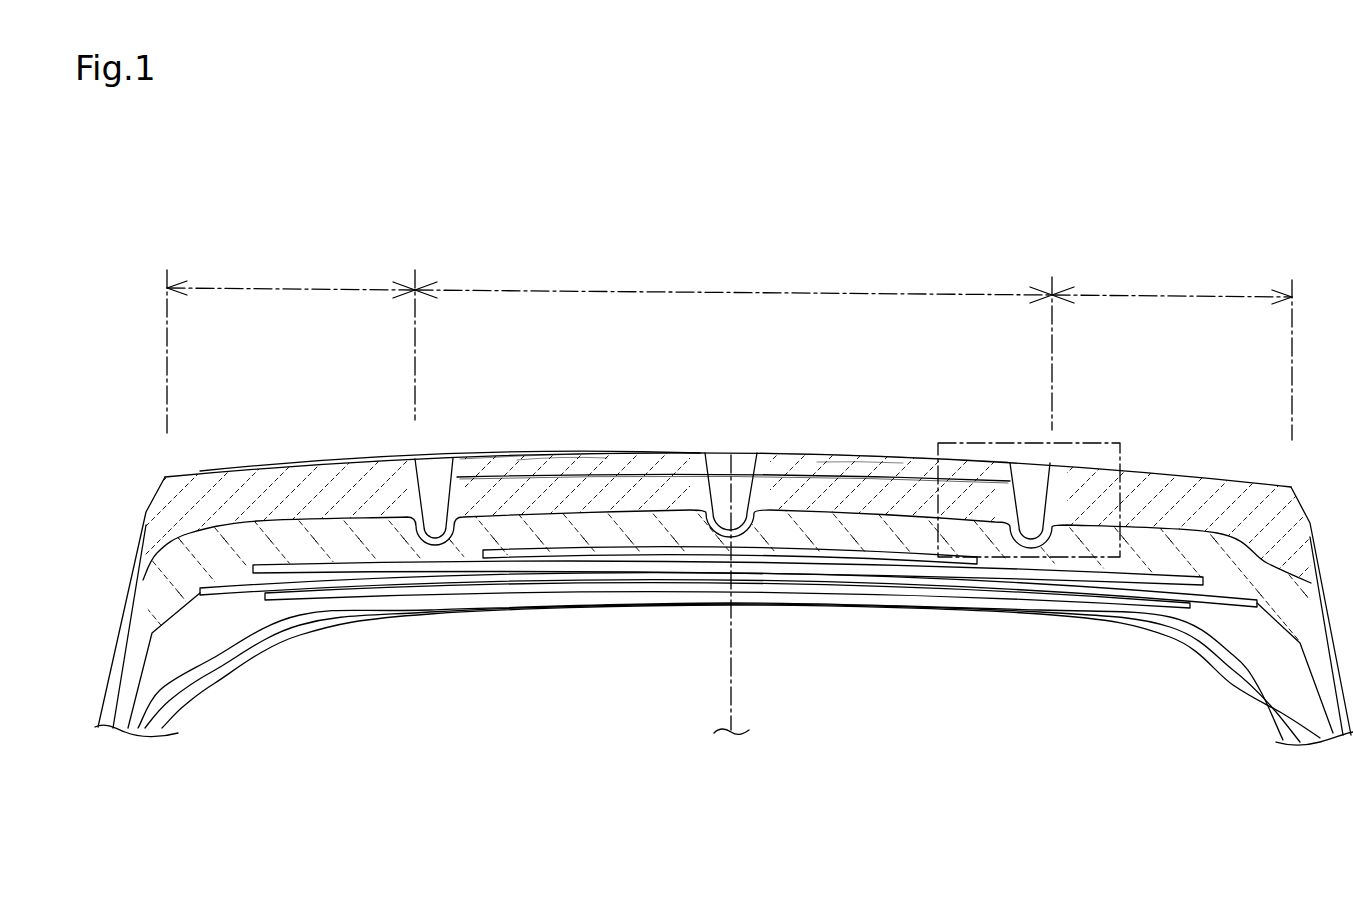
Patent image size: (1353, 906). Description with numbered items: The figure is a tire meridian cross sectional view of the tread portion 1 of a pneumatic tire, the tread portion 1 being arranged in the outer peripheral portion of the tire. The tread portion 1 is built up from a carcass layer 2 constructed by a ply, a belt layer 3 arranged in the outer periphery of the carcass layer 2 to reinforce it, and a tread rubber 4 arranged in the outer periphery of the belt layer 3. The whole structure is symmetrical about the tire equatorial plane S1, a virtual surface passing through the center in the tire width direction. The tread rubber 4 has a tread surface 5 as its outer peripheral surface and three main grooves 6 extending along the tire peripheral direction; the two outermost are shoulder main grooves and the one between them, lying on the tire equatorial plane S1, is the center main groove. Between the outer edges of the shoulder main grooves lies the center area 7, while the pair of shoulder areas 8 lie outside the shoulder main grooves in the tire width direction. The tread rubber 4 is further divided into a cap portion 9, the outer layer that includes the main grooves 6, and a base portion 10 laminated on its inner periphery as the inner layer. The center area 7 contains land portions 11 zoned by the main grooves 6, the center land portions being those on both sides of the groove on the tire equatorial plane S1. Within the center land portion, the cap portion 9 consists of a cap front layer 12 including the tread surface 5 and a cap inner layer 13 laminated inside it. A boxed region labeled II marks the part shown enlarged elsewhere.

The tread portion 1 is at (1267, 212).
The carcass layer 2 is at (490, 598).
The belt layer 3 is at (555, 567).
The tread rubber 4 is at (607, 333).
The tread surface 5 is at (318, 466).
The main grooves 6 is at (437, 468).
The center area 7 is at (733, 291).
The shoulder areas 8 is at (307, 289).
The cap portion 9 is at (568, 382).
The base portion 10 is at (592, 520).
The land portions 11 is at (646, 400).
The cap front layer 12 is at (508, 470).
The cap inner layer 13 is at (552, 490).
The tire equatorial plane S1 is at (735, 690).
The section line II is at (1092, 443).